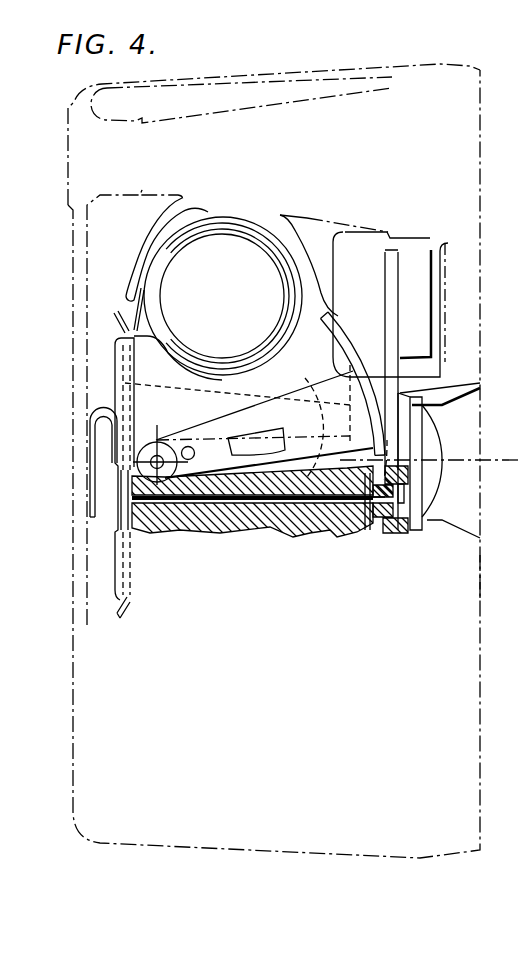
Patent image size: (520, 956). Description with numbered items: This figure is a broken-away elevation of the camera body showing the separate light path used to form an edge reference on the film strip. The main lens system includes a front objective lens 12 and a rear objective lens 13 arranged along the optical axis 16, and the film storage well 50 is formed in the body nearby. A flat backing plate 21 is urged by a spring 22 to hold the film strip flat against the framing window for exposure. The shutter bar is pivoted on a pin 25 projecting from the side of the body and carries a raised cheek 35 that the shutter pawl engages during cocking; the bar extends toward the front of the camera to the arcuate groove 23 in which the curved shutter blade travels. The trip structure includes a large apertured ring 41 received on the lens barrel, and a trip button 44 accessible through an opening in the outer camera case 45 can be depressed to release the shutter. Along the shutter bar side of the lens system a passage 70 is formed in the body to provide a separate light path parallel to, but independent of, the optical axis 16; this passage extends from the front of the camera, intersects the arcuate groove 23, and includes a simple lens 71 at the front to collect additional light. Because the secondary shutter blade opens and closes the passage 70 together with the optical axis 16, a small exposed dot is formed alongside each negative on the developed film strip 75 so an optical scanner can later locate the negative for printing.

The front objective lens 12 is at (435, 434).
The rear objective lens 13 is at (352, 366).
The optical axis 16 is at (481, 460).
The flat backing plate 21 is at (117, 327).
The spring 22 is at (95, 428).
The arcuate groove 23 is at (334, 336).
The pin 25 is at (157, 440).
The cheek 35 is at (250, 440).
The apertured ring 41 is at (402, 400).
The trip button 44 is at (427, 262).
The outer camera case 45 is at (480, 571).
The film storage well 50 is at (206, 216).
The passage 70 is at (302, 520).
The simple lens 71 is at (427, 505).
The developed film strip 75 is at (138, 308).